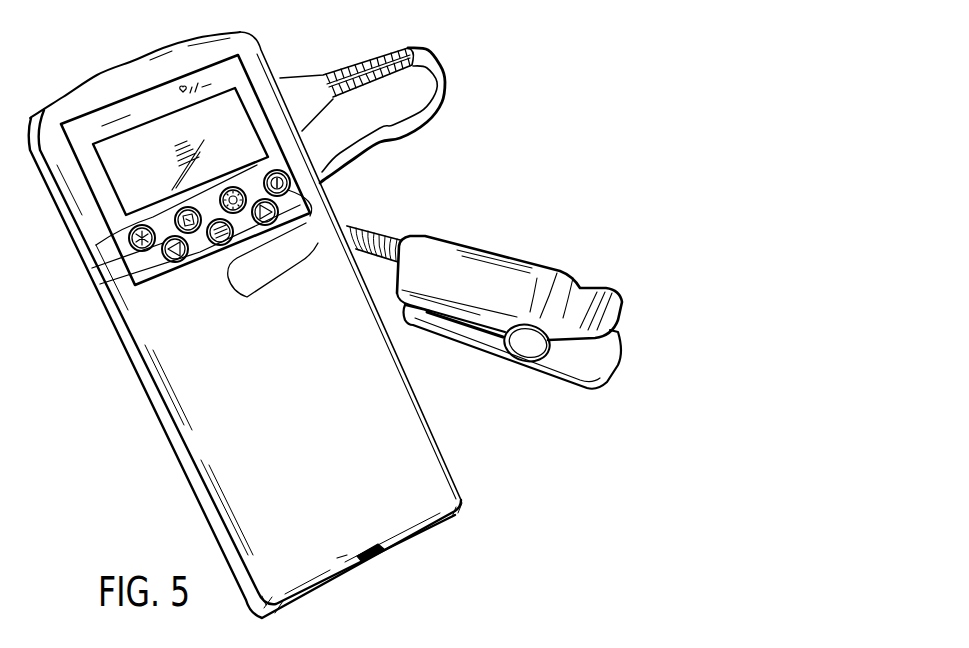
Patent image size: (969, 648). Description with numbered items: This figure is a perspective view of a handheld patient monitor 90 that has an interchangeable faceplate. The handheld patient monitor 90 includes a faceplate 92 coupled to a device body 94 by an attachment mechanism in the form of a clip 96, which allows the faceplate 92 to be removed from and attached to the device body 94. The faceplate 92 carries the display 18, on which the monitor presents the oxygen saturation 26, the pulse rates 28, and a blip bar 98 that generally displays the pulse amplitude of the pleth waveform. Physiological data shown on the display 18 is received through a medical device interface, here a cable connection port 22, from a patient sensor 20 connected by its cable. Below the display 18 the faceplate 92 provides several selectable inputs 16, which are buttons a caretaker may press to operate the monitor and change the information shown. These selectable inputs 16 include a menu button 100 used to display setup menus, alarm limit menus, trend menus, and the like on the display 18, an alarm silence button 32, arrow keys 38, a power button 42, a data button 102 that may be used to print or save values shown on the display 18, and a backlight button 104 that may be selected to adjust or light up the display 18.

The handheld patient monitor 90 is at (469, 122).
The faceplate 92 is at (407, 418).
The device body 94 is at (192, 478).
The clip 96 is at (377, 553).
The display 18 is at (108, 168).
The oxygen saturation 26 is at (128, 146).
The pulse rates 28 is at (223, 112).
The blip bar 98 is at (175, 143).
The alarm silence button 32 is at (100, 276).
The arrow keys 38 is at (98, 297).
The power button 42 is at (300, 200).
The menu button 100 is at (218, 246).
The data button 102 is at (128, 241).
The selectable inputs 16 is at (236, 292).
The cable connection port 22 is at (280, 78).
The patient sensor 20 is at (443, 52).
The backlight button 104 is at (303, 127).